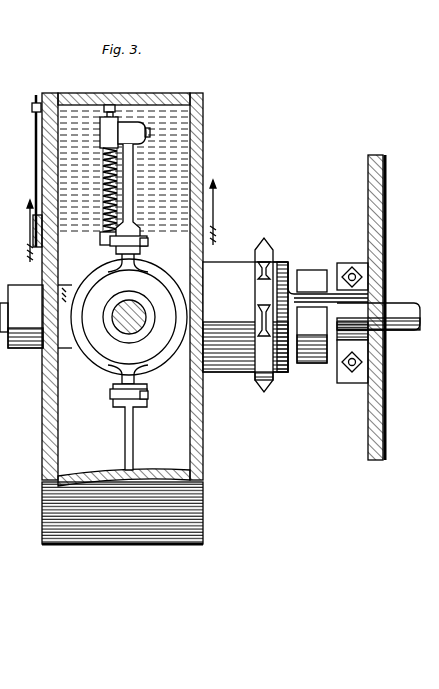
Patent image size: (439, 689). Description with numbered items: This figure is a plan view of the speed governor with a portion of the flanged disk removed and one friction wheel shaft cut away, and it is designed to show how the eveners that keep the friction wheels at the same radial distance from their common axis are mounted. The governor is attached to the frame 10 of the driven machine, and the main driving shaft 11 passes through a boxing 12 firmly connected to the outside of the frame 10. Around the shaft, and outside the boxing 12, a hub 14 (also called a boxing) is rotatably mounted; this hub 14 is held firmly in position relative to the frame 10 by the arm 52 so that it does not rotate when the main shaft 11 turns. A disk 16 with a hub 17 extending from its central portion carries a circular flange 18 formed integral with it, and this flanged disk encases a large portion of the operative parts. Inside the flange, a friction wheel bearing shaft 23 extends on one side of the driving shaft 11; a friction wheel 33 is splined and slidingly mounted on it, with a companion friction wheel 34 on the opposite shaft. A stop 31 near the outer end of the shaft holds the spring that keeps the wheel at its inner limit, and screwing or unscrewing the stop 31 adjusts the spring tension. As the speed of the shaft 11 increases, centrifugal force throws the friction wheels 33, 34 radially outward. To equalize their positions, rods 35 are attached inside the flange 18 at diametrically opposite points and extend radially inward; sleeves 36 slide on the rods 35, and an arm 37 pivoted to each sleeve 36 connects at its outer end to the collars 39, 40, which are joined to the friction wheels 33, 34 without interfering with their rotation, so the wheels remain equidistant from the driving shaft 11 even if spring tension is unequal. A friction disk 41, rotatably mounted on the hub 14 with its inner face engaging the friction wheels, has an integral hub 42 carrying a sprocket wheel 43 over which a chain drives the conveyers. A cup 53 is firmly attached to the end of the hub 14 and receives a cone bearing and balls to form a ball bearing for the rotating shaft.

The frame 10 is at (388, 372).
The main driving shaft 11 is at (405, 310).
The boxing 12 is at (352, 376).
The hub 14 is at (34, 178).
The disk 16 is at (52, 393).
The hub 17 is at (62, 344).
The circular flange 18 is at (105, 535).
The friction wheel bearing shaft 23 is at (142, 313).
The stop 31 is at (132, 336).
The friction wheel 33 is at (164, 360).
The friction wheel 34 is at (106, 204).
The rod 35 is at (104, 178).
The sleeve 36 is at (104, 130).
The arm 37 is at (136, 182).
The collar 39 is at (150, 266).
The collar 40 is at (100, 247).
The friction disk 41 is at (205, 168).
The hub 42 is at (231, 365).
The sprocket wheel 43 is at (264, 388).
The arm 52 is at (296, 277).
The cup 53 is at (308, 364).